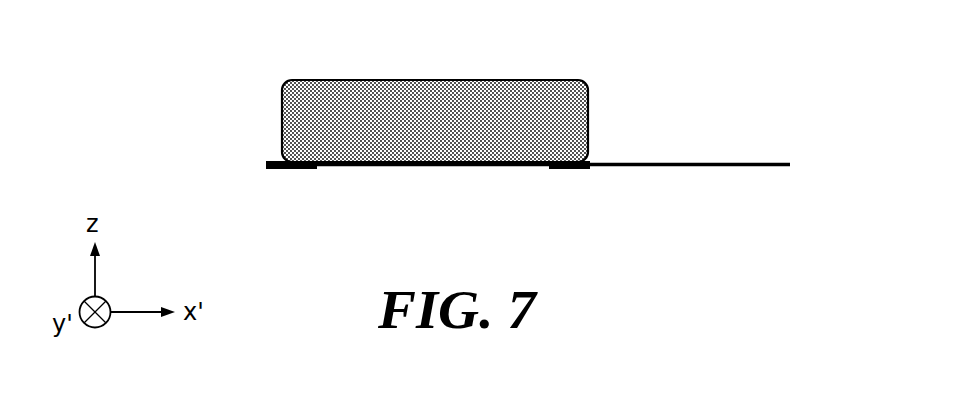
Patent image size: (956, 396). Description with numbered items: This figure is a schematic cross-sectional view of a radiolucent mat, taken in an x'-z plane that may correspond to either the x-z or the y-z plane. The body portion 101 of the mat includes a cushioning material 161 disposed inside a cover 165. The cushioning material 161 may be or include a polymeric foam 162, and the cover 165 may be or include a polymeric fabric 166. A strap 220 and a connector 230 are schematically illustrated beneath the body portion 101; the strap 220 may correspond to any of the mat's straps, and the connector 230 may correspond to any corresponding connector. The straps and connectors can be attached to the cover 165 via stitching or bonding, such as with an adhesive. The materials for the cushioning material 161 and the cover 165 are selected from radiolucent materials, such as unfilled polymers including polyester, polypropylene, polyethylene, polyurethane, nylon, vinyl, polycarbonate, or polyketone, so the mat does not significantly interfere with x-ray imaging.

The body portion 101 is at (570, 127).
The cushioning material 161 is at (473, 100).
The polymeric foam 162 is at (547, 103).
The cover 165 is at (340, 80).
The polymeric fabric 166 is at (433, 80).
The strap 220 is at (680, 167).
The connector 230 is at (271, 172).